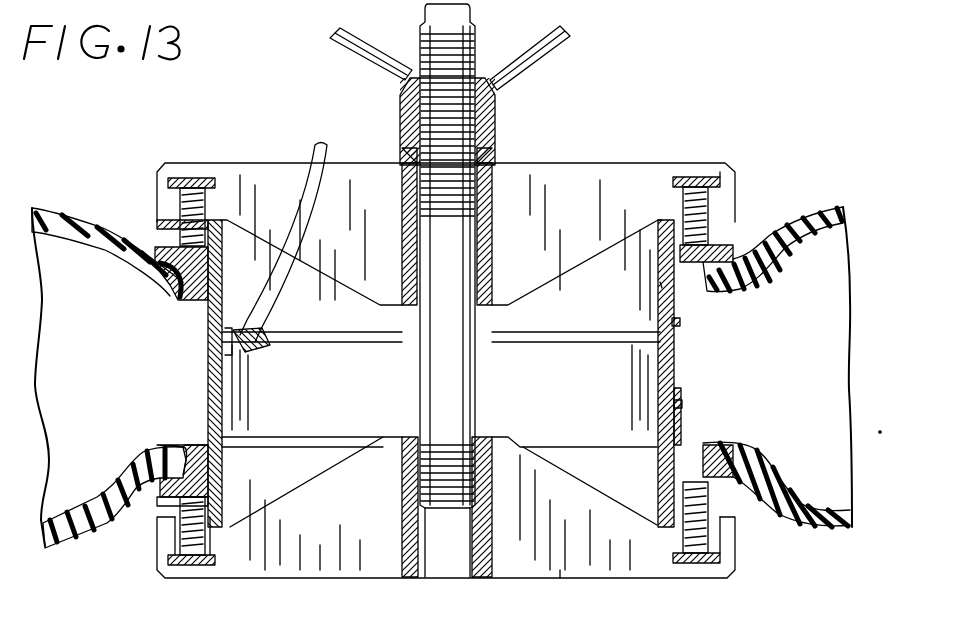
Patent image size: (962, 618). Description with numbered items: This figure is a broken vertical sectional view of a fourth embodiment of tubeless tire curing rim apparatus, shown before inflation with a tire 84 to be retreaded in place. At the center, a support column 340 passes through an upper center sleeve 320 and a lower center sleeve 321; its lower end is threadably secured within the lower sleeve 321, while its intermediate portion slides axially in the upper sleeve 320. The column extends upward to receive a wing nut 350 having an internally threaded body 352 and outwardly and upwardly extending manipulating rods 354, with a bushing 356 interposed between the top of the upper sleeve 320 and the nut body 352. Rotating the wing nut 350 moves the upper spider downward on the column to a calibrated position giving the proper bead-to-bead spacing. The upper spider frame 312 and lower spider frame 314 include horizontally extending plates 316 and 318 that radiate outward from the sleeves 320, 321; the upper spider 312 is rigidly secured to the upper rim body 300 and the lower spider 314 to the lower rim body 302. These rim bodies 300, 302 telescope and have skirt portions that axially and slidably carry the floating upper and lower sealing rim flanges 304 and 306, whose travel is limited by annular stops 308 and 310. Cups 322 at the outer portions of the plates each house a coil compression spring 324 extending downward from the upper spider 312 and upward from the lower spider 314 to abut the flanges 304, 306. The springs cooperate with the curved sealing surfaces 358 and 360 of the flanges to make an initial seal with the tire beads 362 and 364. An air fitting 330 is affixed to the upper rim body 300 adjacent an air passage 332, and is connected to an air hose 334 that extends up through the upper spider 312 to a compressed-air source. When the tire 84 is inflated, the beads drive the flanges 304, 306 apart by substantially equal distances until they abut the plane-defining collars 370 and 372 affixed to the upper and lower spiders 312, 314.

The tire 84 is at (96, 525).
The upper rim body 300 is at (688, 356).
The lower rim body 302 is at (697, 423).
The upper sealing rim flange 304 is at (741, 228).
The lower sealing rim flange 306 is at (742, 508).
The annular stop 308 is at (680, 325).
The annular stop 310 is at (684, 404).
The upper spider frame 312 is at (619, 160).
The lower spider frame 314 is at (568, 586).
The plate 316 is at (593, 216).
The plate 318 is at (608, 550).
The upper center sleeve 320 is at (492, 282).
The lower center sleeve 321 is at (412, 572).
The cup 322 is at (165, 185).
The coil compression spring 324 is at (700, 180).
The air fitting 330 is at (266, 350).
The air passage 332 is at (222, 346).
The air hose 334 is at (312, 150).
The support column 340 is at (420, 395).
The wing nut 350 is at (506, 119).
The internally threaded body 352 is at (400, 112).
The manipulating rod 354 is at (565, 48).
The bushing 356 is at (497, 148).
The curved sealing surface 358 is at (127, 273).
The curved sealing surface 360 is at (162, 480).
The tire bead 362 is at (168, 298).
The tire bead 364 is at (190, 443).
The plane-defining collar 370 is at (158, 224).
The plane-defining collar 372 is at (180, 520).